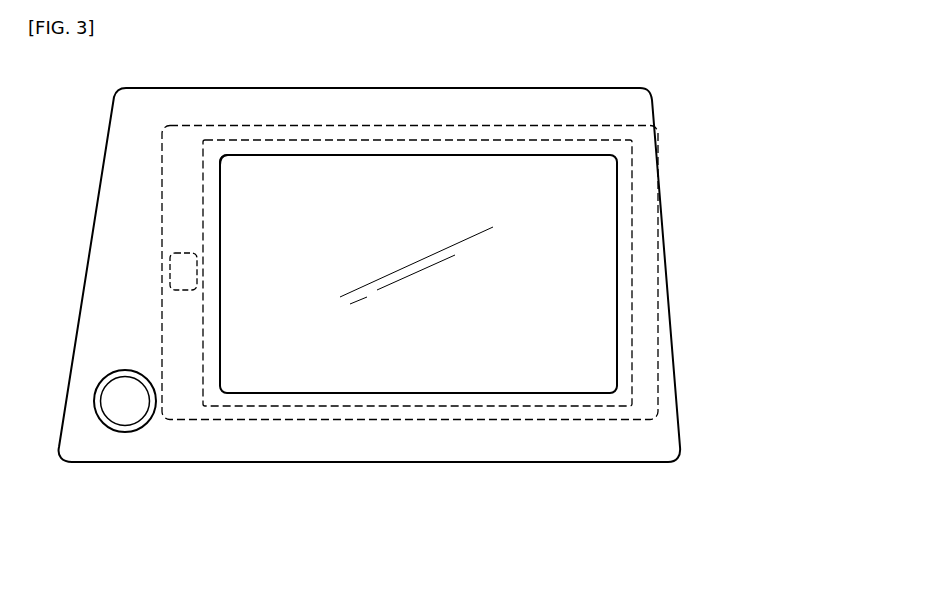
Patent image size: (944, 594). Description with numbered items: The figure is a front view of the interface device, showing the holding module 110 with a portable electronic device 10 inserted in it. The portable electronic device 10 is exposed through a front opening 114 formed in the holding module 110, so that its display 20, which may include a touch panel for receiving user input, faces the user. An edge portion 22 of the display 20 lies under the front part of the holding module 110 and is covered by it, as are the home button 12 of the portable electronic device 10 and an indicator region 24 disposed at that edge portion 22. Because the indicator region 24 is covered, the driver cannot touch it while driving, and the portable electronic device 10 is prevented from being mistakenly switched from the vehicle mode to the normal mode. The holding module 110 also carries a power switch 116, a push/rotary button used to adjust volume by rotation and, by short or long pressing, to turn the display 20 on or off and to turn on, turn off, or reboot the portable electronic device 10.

The portable electronic device 10 is at (663, 142).
The holding module 110 is at (618, 450).
The front opening 114 is at (220, 188).
The power switch 116 is at (128, 418).
The home button 12 is at (178, 273).
The display 20 is at (483, 378).
The edge portion 22 is at (297, 397).
The indicator region 24 is at (625, 340).